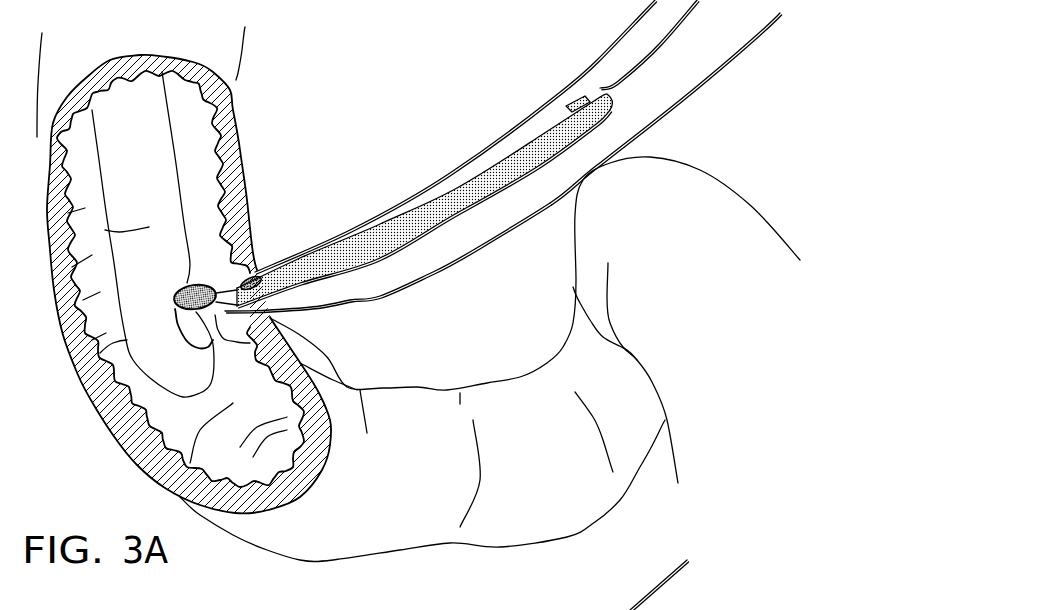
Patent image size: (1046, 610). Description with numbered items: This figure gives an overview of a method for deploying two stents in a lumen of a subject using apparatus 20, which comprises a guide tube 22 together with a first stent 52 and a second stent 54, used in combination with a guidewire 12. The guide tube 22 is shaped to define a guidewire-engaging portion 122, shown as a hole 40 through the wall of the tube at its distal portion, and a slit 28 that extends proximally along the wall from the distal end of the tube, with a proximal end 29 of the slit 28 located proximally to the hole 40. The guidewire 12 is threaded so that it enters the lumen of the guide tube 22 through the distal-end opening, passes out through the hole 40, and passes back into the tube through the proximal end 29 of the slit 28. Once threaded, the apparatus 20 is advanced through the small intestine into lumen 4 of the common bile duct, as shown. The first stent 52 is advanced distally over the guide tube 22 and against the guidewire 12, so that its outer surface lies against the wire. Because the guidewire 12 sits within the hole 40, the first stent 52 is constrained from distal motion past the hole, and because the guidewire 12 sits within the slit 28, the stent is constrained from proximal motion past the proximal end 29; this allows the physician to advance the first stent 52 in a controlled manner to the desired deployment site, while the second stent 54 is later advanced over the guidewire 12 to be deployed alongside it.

The lumen 4 is at (480, 230).
The guidewire 12 is at (658, 48).
The apparatus 20 is at (300, 228).
The guide tube 22 is at (243, 277).
The slit 28 is at (603, 90).
The proximal end of slit 29 is at (270, 333).
The hole 40 is at (666, 109).
The guidewire-engaging portion 122 is at (622, 87).
The first stent 52 is at (455, 197).
The second stent 54 is at (182, 278).